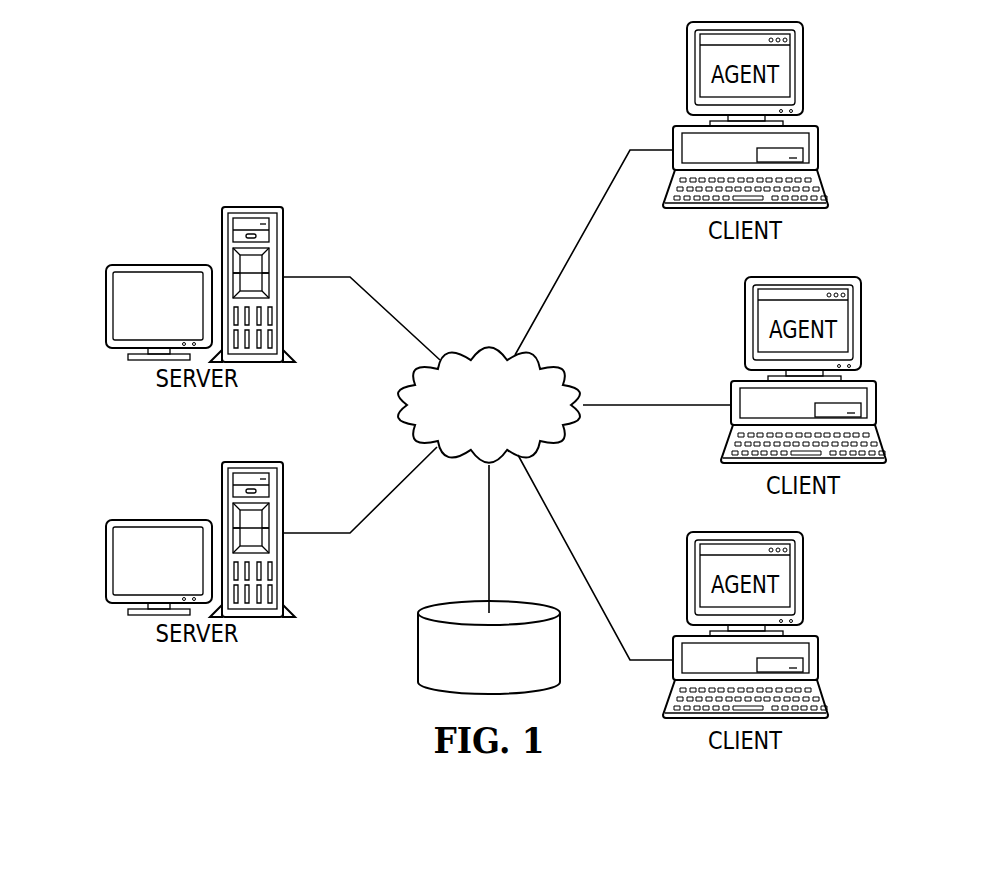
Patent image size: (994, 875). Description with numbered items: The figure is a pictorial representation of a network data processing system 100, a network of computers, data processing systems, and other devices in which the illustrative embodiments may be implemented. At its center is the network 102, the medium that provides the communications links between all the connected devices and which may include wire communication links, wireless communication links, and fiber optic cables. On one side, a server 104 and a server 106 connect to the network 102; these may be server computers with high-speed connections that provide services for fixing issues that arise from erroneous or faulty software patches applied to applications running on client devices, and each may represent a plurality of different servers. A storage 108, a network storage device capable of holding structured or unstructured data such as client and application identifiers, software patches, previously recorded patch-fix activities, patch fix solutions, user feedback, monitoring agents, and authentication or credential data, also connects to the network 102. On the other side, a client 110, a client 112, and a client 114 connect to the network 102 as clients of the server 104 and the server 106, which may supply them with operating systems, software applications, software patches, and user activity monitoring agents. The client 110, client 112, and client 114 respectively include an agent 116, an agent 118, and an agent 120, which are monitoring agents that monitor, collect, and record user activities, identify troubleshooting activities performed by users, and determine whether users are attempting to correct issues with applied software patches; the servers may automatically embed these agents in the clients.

The network data processing system 100 is at (327, 115).
The network 102 is at (465, 355).
The server 104 is at (106, 290).
The server 106 is at (106, 562).
The storage 108 is at (418, 651).
The client 110 is at (818, 140).
The client 112 is at (876, 395).
The client 114 is at (818, 672).
The agent 116 is at (792, 70).
The agent 118 is at (850, 325).
The agent 120 is at (793, 583).